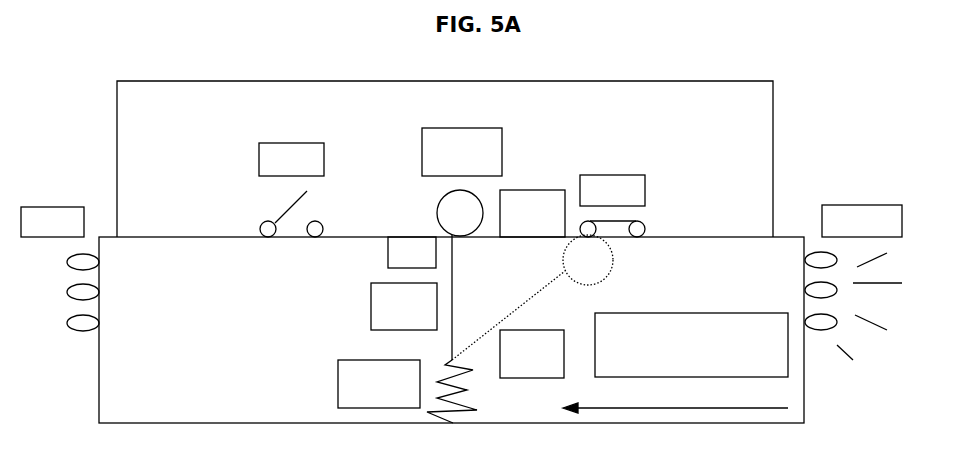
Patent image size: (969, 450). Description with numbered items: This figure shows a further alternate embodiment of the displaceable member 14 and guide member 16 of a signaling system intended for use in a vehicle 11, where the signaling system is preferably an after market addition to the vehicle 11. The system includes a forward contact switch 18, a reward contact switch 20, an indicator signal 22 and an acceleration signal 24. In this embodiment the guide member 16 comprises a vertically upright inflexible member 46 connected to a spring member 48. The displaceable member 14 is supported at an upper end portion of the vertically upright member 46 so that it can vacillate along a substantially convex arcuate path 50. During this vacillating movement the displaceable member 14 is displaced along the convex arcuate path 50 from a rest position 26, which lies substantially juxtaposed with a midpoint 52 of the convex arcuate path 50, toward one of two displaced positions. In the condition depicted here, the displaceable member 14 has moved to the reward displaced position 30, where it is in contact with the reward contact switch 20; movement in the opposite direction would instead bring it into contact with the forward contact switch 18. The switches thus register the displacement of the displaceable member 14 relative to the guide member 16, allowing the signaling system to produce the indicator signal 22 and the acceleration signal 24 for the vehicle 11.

The vehicle 11 is at (675, 363).
The displaceable member 14 is at (462, 152).
The guide member 16 is at (532, 354).
The forward contact switch 18 is at (291, 190).
The reward contact switch 20 is at (612, 206).
The indicator signal 22 is at (60, 269).
The acceleration signal 24 is at (842, 247).
The rest position 26 is at (460, 275).
The reward displaced position 30 is at (532, 297).
The vertically upright inflexible member 46 is at (404, 306).
The spring member 48 is at (379, 384).
The convex arcuate path 50 is at (532, 213).
The midpoint 52 is at (412, 252).